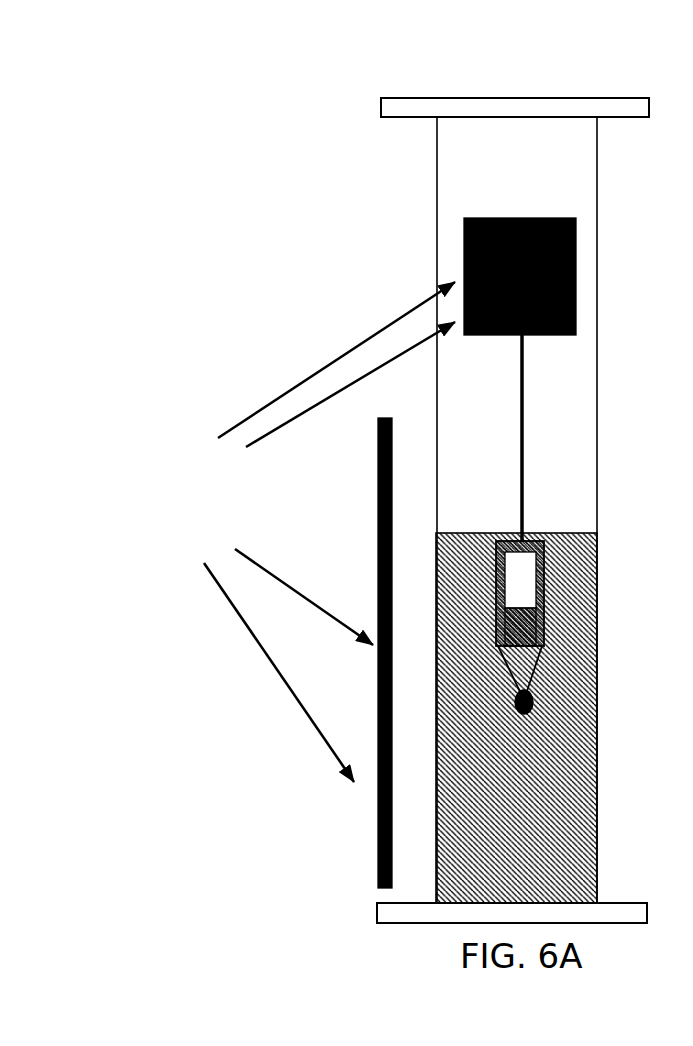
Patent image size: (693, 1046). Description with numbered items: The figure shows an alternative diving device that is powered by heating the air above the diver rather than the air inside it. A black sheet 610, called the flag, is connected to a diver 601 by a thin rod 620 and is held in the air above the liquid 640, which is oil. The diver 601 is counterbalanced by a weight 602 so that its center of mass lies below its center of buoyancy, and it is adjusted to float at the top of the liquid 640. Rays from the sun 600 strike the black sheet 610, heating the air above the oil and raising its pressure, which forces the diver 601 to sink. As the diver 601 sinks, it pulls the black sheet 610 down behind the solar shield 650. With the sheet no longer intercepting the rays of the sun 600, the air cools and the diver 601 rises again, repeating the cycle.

The sun 600 is at (217, 508).
The diver 601 is at (547, 600).
The weight 602 is at (540, 704).
The black sheet 610 is at (576, 276).
The thin rod 620 is at (563, 428).
The liquid 640 is at (516, 718).
The solar shield 650 is at (361, 886).